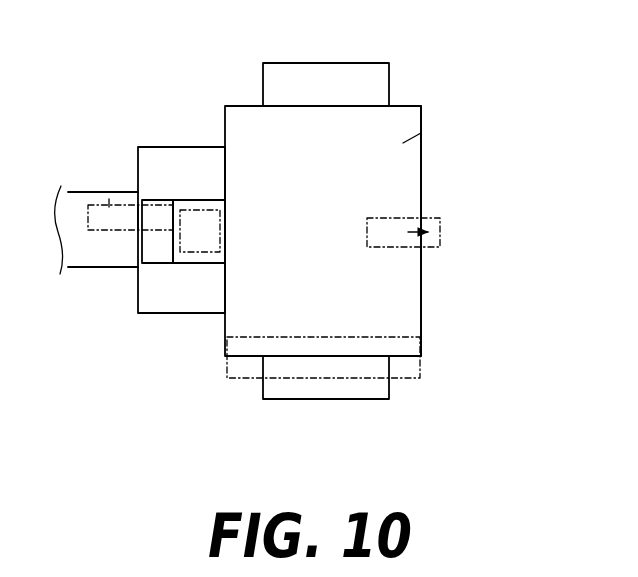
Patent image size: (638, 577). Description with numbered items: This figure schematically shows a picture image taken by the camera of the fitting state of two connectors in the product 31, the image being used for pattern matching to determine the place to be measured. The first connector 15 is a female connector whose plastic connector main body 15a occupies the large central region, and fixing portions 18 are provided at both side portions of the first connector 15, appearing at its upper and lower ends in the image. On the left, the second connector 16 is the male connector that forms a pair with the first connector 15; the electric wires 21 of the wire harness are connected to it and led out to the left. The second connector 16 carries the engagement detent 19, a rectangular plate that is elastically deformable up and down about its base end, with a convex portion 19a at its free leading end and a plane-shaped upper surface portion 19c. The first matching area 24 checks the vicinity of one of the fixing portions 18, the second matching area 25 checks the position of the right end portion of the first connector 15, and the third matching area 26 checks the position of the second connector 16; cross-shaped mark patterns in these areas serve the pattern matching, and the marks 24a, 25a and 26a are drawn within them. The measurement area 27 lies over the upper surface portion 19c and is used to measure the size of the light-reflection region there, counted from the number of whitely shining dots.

The product 31 is at (461, 72).
The first connector 15 is at (421, 180).
The connector main body 15a is at (421, 133).
The fixing portions 18 is at (358, 70).
The second connector 16 is at (137, 152).
The electric wires 21 is at (70, 192).
The engagement detent 19 is at (195, 199).
The convex portion 19a is at (152, 265).
The upper surface portion 19c is at (196, 264).
The measurement area 27 is at (222, 228).
The third matching area 26 is at (108, 199).
The coolant passage end 26a is at (137, 213).
The second matching area 25 is at (440, 226).
The coolant port opening 25a is at (438, 252).
The first matching area 24 is at (420, 368).
The coolant channel opening 24a is at (327, 357).